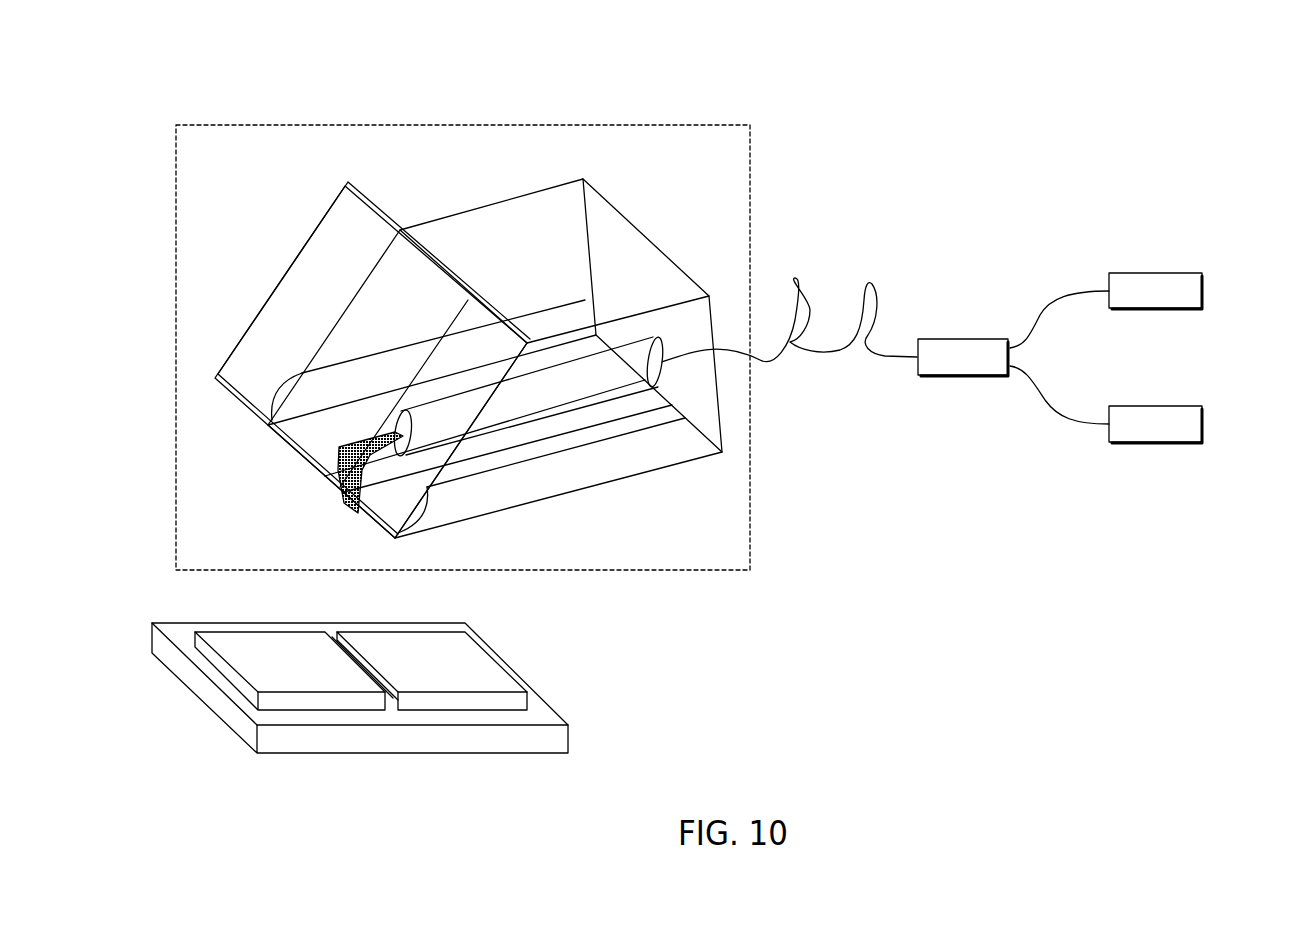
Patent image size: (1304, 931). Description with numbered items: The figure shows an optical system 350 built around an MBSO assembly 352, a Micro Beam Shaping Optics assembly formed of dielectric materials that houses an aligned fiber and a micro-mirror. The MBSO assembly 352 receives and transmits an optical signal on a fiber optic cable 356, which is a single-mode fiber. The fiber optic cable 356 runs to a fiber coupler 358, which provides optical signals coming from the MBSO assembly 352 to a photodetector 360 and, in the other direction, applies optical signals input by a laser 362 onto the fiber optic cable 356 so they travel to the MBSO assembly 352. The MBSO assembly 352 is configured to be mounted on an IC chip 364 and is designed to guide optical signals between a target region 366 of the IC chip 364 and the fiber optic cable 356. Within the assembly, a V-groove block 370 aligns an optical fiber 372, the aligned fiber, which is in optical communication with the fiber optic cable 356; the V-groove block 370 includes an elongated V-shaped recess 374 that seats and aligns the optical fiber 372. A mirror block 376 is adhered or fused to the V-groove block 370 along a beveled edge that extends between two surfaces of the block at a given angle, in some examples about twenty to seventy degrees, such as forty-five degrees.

The optical system 350 is at (150, 67).
The MBSO assembly 352 is at (176, 347).
The fiber optic cable 356 is at (873, 288).
The fiber coupler 358 is at (967, 376).
The photodetector 360 is at (1202, 426).
The laser 362 is at (1202, 292).
The IC chip 364 is at (413, 754).
The target region 366 is at (367, 673).
The V-groove block 370 is at (641, 234).
The optical fiber 372 is at (558, 373).
The elongated V-shaped recess 374 is at (550, 428).
The mirror block 376 is at (282, 283).